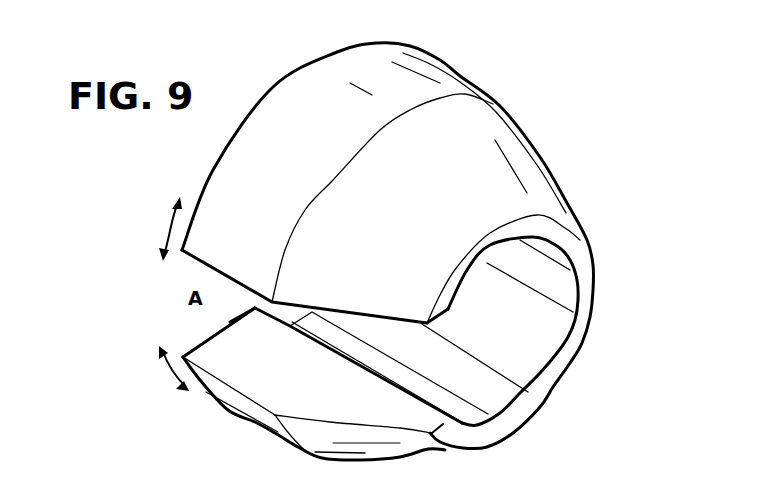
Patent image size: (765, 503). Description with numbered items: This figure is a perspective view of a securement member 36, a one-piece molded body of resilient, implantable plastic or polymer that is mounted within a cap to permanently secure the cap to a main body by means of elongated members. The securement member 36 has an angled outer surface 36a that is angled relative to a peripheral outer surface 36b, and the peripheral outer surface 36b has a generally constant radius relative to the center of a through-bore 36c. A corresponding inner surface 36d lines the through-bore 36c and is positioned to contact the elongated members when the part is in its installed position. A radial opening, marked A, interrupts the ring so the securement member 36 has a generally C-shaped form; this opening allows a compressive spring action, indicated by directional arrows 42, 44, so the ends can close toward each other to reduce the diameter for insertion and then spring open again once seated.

The securement member 36 is at (568, 128).
The angled outer surface 36a is at (382, 198).
The peripheral outer surface 36b is at (419, 133).
The through-bore 36c is at (518, 368).
The inner surface 36d is at (497, 316).
The directional arrow 42 is at (168, 228).
The directional arrow 44 is at (168, 369).